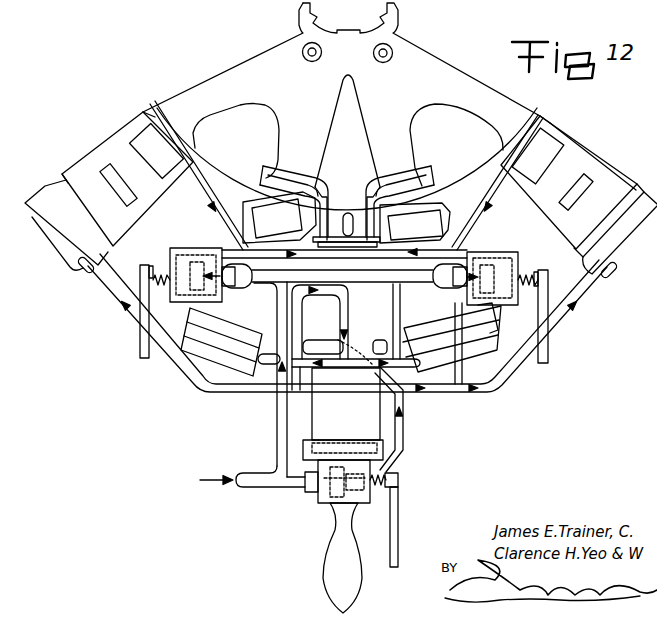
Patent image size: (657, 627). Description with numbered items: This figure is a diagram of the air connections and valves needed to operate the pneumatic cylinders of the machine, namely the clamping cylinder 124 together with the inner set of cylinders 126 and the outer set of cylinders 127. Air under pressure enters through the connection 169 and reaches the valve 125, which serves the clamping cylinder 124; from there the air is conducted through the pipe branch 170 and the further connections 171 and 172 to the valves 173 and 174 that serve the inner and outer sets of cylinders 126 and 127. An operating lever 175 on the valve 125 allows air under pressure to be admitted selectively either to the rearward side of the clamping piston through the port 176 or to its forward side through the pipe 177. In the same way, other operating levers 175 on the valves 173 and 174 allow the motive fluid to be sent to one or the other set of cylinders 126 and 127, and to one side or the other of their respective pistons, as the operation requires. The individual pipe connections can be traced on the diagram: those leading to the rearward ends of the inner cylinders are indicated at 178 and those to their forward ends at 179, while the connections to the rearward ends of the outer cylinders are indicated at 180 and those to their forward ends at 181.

The clamping cylinder 124 is at (343, 414).
The valve 125 is at (322, 498).
The inner set of pneumatic cylinders 126 is at (346, 217).
The outer set of pneumatic cylinders 127 is at (349, 180).
The air connection 169 is at (246, 484).
The pipe branch 170 is at (283, 425).
The connection 171 is at (268, 282).
The connection 172 is at (404, 330).
The valve 173 is at (191, 300).
The valve 174 is at (493, 250).
The operating lever 175 is at (142, 347).
The port 176 is at (373, 472).
The pipe 177 is at (402, 432).
The pipe connections to rearward ends of inner cylinders 178 is at (350, 294).
The pipe connections to forward ends of inner cylinders 179 is at (331, 240).
The pipe connections to rearward ends of outer cylinders 180 is at (183, 376).
The pipe connections to forward ends of outer cylinders 181 is at (195, 188).